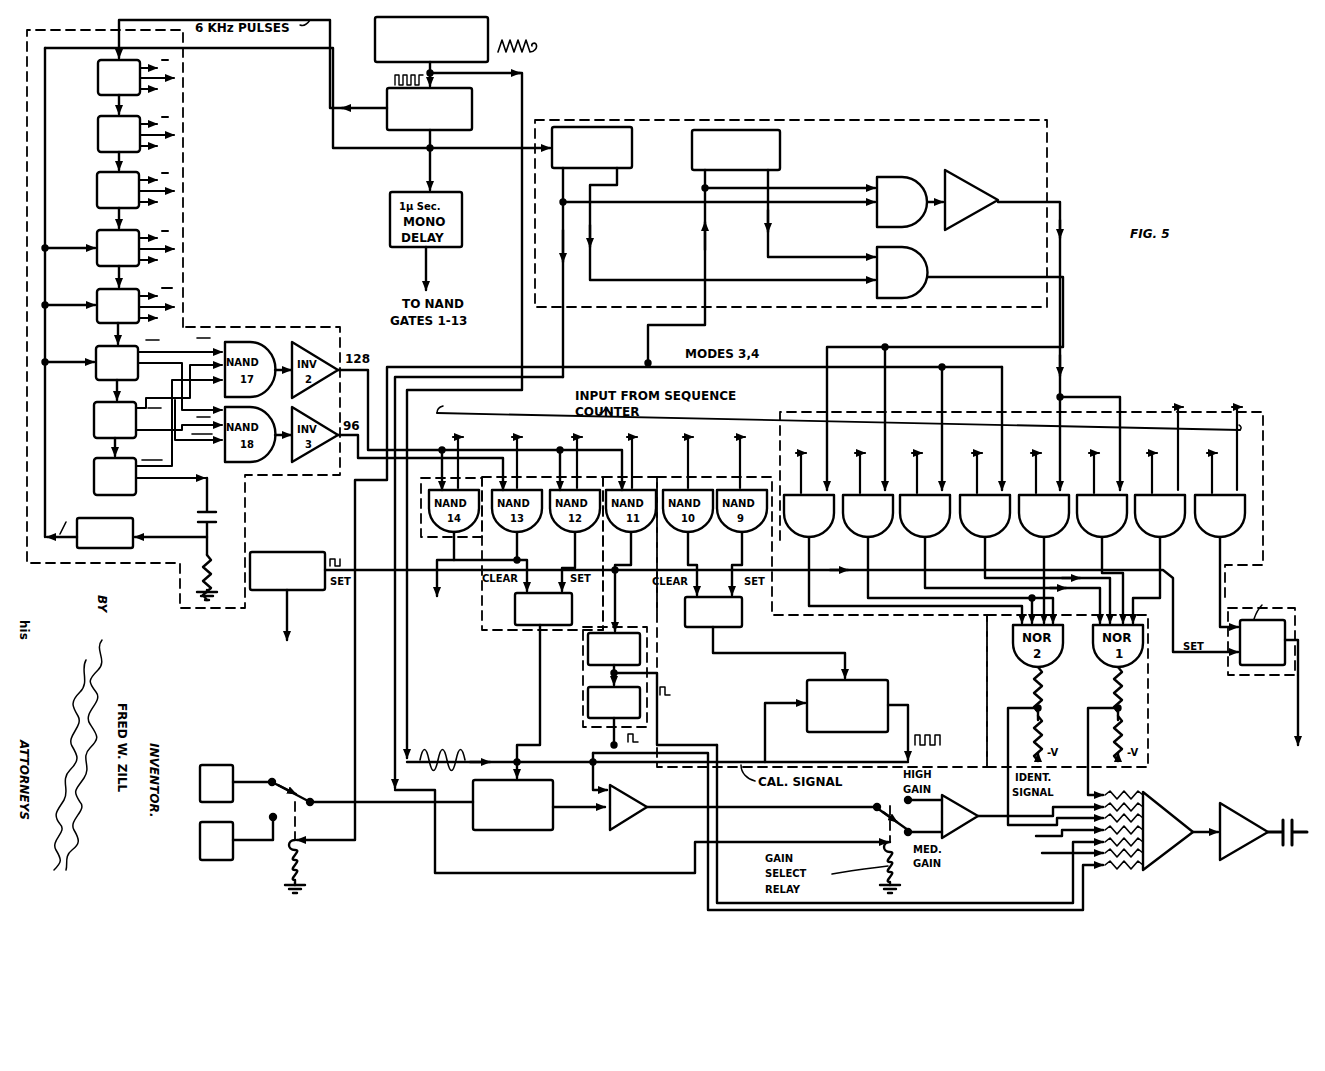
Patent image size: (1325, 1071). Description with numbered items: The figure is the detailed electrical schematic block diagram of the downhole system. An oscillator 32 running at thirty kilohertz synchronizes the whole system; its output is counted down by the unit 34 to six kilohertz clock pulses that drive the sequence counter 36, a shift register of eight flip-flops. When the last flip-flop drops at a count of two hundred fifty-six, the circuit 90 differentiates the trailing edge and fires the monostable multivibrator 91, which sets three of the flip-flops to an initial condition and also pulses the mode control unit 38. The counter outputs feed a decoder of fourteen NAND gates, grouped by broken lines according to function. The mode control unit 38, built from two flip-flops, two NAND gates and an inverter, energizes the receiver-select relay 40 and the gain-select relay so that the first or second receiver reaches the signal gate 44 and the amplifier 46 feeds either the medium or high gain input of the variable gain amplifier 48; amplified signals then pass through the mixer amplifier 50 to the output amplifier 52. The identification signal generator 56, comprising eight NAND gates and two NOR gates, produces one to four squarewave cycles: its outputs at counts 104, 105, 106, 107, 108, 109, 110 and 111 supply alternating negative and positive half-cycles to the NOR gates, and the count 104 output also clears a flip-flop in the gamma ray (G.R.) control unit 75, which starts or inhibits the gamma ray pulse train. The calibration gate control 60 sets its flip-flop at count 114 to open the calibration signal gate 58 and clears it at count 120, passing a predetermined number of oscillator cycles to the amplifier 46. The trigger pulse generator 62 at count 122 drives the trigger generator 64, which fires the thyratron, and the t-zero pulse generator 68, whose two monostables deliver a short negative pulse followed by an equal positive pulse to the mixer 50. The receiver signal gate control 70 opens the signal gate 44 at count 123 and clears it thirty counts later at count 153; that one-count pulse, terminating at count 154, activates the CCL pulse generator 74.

The oscillator 32 is at (490, 36).
The counter unit 34 is at (472, 108).
The sequence counter 36 is at (184, 181).
The mode control unit 38 is at (686, 118).
The receiver-select relay 40 is at (300, 860).
The signal gate 44 is at (538, 832).
The amplifier 46 is at (629, 828).
The variable gain amplifier 48 is at (964, 805).
The mixer amplifier 50 is at (1168, 858).
The output amplifier 52 is at (1245, 853).
The identification signal generator 56 is at (1204, 412).
The calibration signal gate 58 is at (892, 697).
The calibration gate control 60 is at (778, 634).
The trigger pulse generator 62 is at (644, 477).
The trigger generator 64 is at (285, 550).
The t0 pulse generator 68 is at (650, 706).
The receiver signal gate control 70 is at (494, 635).
The CCL pulse generator 74 is at (438, 616).
The gamma ray control unit 75 is at (440, 438).
The differentiating circuit 90 is at (214, 529).
The monostable multivibrator 91 is at (136, 526).
The count 104 output of NAND 1 104 is at (1234, 582).
The count 105 output of NAND 2 105 is at (1161, 580).
The count 106 output of NAND 3 106 is at (1117, 580).
The count 107 output of NAND 4 107 is at (1059, 580).
The count 108 output of NAND 5 108 is at (1047, 580).
The count 109 output of NAND 6 109 is at (1012, 580).
The count 110 output of NAND 7 110 is at (960, 580).
The count 111 output of NAND 8 111 is at (915, 580).
The count 114 output of NAND 9 114 is at (752, 563).
The count 120 output of NAND 10 120 is at (703, 563).
The count 122 output of NAND 11 122 is at (637, 581).
The count 123 output of NAND 12 123 is at (583, 561).
The count 153 output of NAND 13 153 is at (499, 561).
The count 154 termination of NAND 13 pulse 154 is at (436, 564).